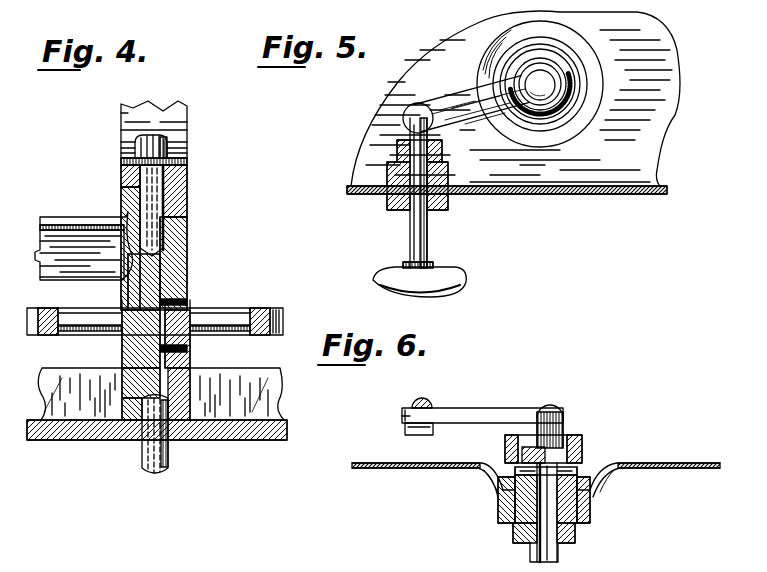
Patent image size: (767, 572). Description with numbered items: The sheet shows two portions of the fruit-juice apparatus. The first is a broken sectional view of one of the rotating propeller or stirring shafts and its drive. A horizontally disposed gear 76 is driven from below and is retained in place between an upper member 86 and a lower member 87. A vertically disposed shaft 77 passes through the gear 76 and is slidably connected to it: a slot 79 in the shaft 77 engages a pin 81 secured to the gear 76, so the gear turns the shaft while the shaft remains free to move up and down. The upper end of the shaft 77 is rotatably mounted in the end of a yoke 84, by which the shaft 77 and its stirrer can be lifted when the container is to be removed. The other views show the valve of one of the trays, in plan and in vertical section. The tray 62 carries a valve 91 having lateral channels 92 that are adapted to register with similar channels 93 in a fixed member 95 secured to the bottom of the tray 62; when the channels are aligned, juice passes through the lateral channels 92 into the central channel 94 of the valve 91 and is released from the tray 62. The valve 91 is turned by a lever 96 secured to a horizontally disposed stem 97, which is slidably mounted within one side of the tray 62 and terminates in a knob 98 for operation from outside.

In FIG. 5, the tray 62 is at (652, 150).
In FIG. 6, the tray 62 is at (428, 470).
In FIG. 4, the horizontally disposed gear 76 is at (39, 308).
In FIG. 4, the vertically disposed shaft 77 is at (190, 222).
In FIG. 4, the slot 79 is at (188, 267).
In FIG. 4, the pin 81 is at (188, 296).
In FIG. 4, the yoke 84 is at (173, 122).
In FIG. 4, the upper member 86 is at (90, 208).
In FIG. 4, the lower member 87 is at (260, 397).
In FIG. 5, the valve 91 is at (537, 73).
In FIG. 6, the valve 91 is at (560, 433).
In FIG. 6, the lateral channel 92 is at (583, 443).
In FIG. 6, the channel 93 is at (580, 465).
In FIG. 6, the central channel 94 is at (533, 550).
In FIG. 5, the fixed member 95 is at (587, 85).
In FIG. 6, the fixed member 95 is at (505, 438).
In FIG. 5, the lever 96 is at (467, 90).
In FIG. 6, the lever 96 is at (468, 410).
In FIG. 5, the stem 97 is at (428, 240).
In FIG. 6, the stem 97 is at (427, 378).
In FIG. 5, the knob 98 is at (437, 297).